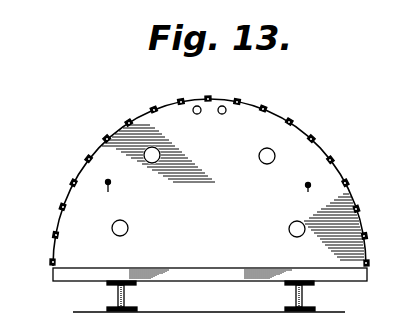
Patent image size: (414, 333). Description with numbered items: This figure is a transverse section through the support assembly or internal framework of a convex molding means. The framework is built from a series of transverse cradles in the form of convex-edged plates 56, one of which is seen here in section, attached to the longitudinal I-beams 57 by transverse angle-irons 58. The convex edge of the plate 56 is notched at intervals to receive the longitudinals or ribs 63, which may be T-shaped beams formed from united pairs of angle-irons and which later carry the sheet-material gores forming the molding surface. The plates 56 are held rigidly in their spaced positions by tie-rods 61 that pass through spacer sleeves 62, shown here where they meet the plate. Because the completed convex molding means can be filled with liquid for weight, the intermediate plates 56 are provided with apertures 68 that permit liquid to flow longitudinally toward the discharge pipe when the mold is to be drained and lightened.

The convex-edged plate 56 is at (248, 112).
The longitudinal I-beam 57 is at (118, 295).
The transverse angle-iron 58 is at (210, 272).
The tie-rod 61 is at (108, 186).
The spacer sleeve 62 is at (111, 182).
The longitudinal rib 63 is at (130, 121).
The aperture 68 is at (221, 114).